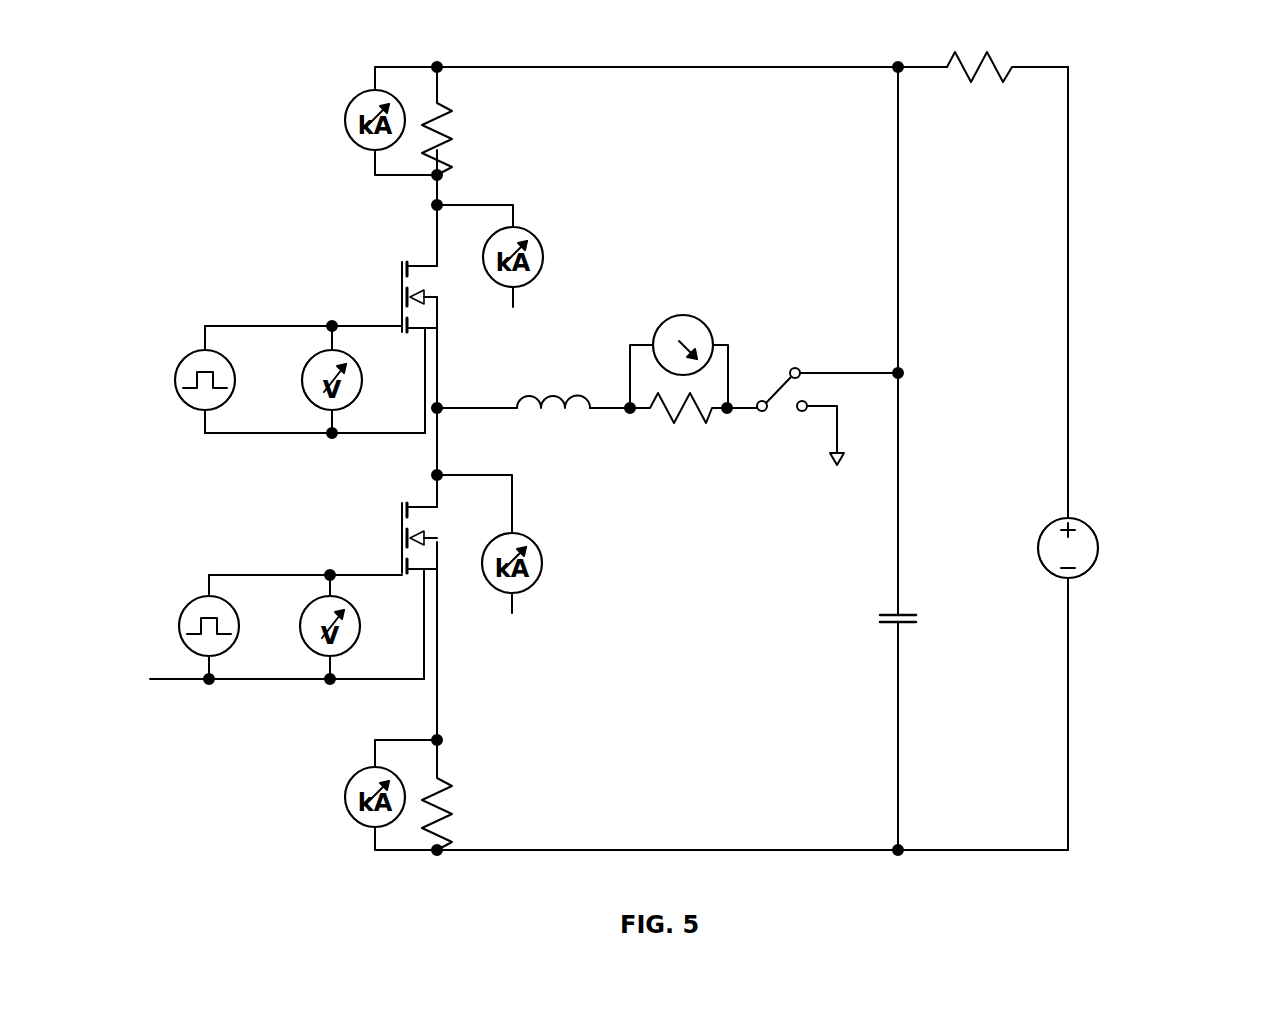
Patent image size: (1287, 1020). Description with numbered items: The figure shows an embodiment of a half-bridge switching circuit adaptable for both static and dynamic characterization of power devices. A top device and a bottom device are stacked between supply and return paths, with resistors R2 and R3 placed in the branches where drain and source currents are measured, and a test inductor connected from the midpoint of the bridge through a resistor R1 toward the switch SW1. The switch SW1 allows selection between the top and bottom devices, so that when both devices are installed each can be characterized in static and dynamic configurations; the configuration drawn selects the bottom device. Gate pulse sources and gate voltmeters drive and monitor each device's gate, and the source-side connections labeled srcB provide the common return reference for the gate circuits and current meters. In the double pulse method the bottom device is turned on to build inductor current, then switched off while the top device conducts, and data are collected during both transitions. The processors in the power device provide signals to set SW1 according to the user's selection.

The resistor R2 is at (456, 133).
The resistor R3 is at (456, 809).
The resistor R1 is at (678, 422).
The switch SW1 is at (812, 400).
The source B connection srcB is at (328, 494).